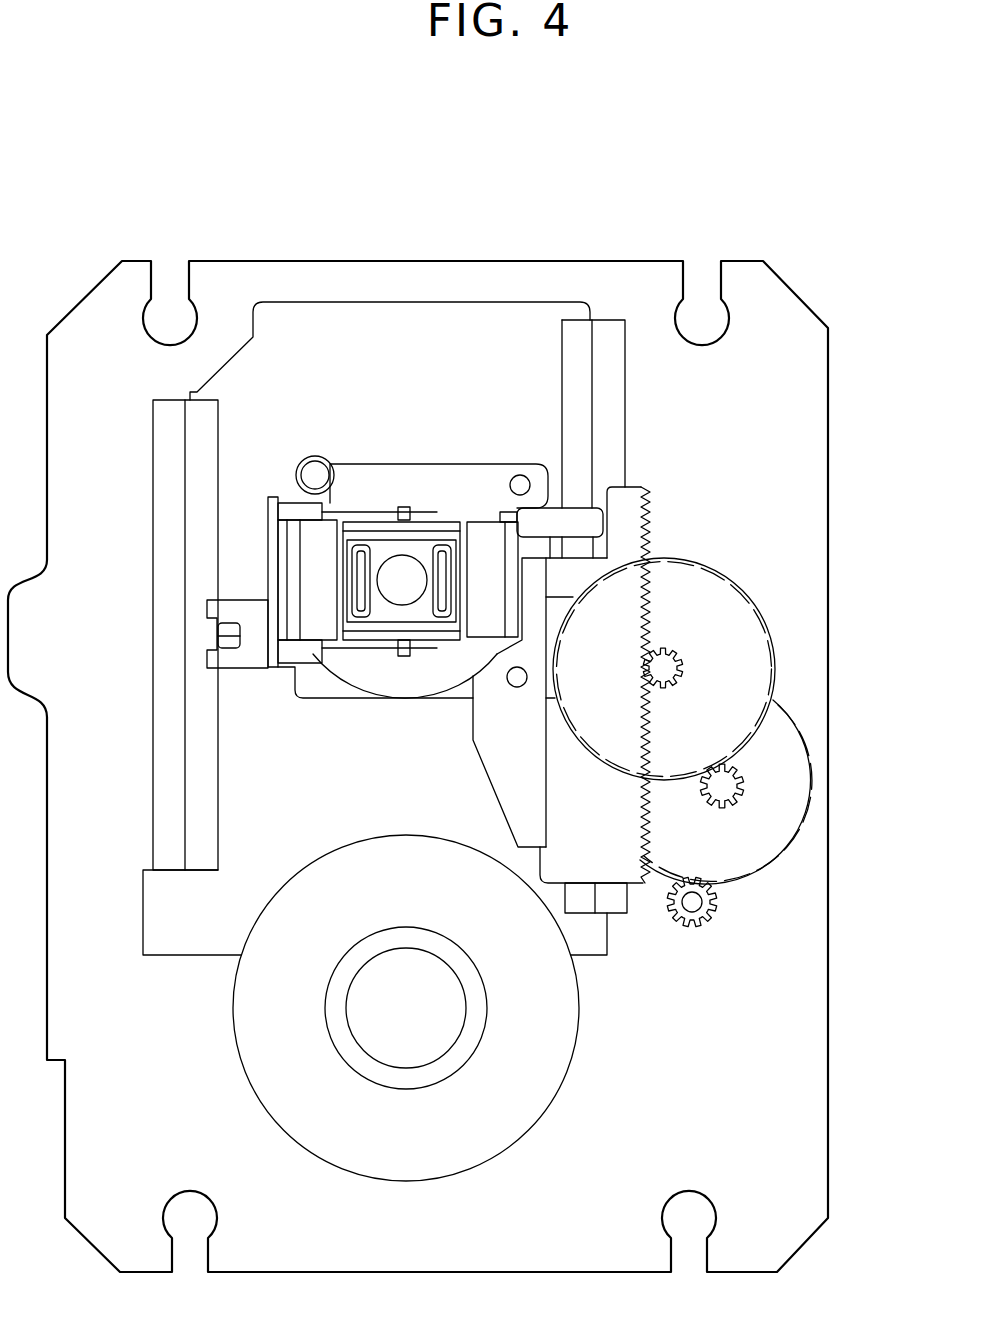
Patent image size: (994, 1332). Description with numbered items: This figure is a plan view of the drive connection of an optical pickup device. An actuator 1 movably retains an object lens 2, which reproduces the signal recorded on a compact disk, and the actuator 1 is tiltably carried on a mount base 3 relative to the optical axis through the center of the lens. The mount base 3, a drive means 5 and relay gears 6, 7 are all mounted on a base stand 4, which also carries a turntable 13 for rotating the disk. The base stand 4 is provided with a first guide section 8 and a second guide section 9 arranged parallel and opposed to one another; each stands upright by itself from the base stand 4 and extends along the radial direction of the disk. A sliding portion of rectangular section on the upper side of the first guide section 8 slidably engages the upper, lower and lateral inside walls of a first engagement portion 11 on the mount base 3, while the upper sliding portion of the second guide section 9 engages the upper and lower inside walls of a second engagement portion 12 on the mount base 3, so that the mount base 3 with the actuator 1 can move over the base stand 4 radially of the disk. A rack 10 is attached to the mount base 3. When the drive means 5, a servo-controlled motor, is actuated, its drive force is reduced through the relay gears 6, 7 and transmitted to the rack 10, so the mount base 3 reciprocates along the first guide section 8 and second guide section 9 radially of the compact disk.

The actuator 1 is at (440, 473).
The object lens 2 is at (398, 570).
The mount base 3 is at (332, 692).
The base stand 4 is at (797, 1058).
The drive means 5 is at (697, 922).
The relay gear 6 is at (748, 648).
The relay gear 7 is at (790, 780).
The first guide section 8 is at (568, 365).
The second guide section 9 is at (205, 428).
The rack 10 is at (636, 515).
The first engagement portion 11 is at (568, 522).
The second engagement portion 12 is at (250, 655).
The turntable 13 is at (543, 1088).